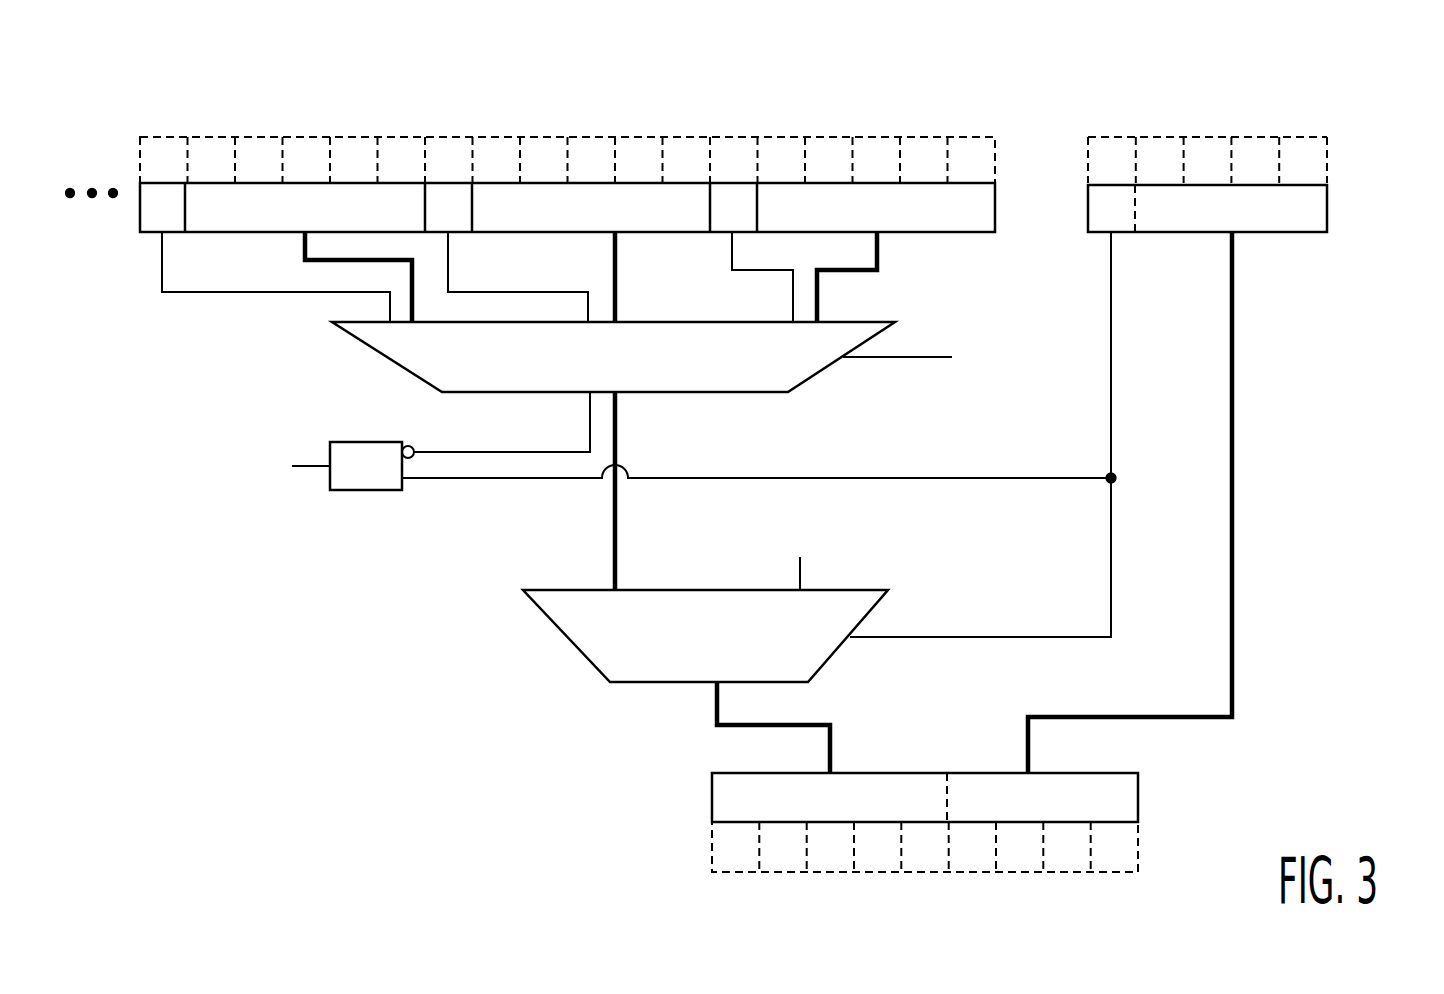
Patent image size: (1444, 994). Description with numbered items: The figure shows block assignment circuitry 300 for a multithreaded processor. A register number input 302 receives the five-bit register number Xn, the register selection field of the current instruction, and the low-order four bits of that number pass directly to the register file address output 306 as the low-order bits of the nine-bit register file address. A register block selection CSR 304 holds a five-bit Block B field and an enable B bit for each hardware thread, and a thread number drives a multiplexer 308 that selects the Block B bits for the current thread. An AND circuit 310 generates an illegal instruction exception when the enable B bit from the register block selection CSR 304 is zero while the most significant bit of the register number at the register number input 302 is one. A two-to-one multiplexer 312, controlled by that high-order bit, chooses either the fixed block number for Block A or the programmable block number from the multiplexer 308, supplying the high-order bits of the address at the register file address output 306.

The block assignment circuitry 300 is at (1366, 108).
The register number input 302 is at (1297, 232).
The register block selection CSR 304 is at (955, 235).
The register file address output 306 is at (1138, 797).
The multiplexer 308 is at (750, 392).
The AND circuit 310 is at (370, 490).
The 2:1 multiplexer 312 is at (567, 642).